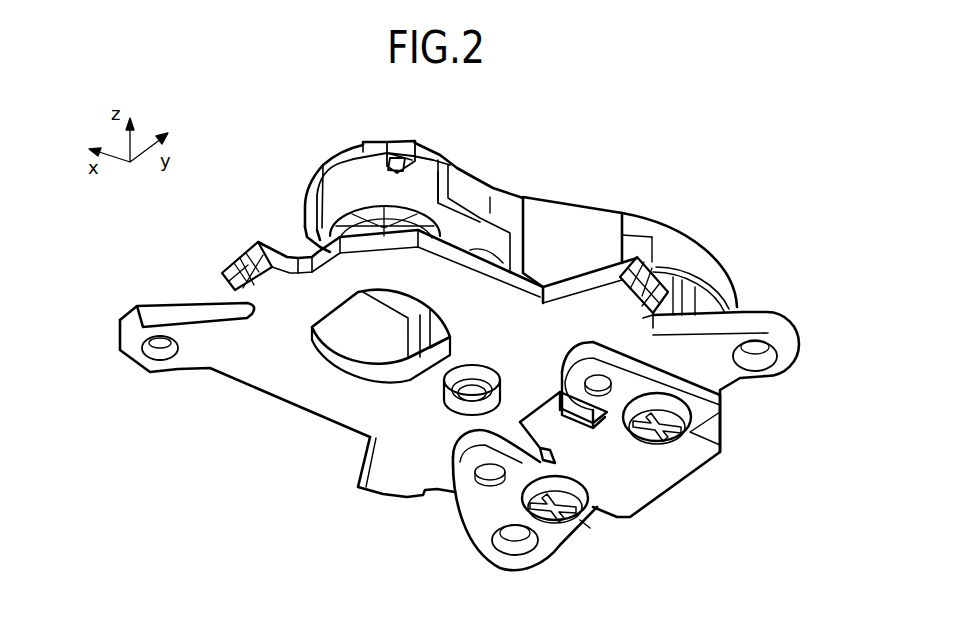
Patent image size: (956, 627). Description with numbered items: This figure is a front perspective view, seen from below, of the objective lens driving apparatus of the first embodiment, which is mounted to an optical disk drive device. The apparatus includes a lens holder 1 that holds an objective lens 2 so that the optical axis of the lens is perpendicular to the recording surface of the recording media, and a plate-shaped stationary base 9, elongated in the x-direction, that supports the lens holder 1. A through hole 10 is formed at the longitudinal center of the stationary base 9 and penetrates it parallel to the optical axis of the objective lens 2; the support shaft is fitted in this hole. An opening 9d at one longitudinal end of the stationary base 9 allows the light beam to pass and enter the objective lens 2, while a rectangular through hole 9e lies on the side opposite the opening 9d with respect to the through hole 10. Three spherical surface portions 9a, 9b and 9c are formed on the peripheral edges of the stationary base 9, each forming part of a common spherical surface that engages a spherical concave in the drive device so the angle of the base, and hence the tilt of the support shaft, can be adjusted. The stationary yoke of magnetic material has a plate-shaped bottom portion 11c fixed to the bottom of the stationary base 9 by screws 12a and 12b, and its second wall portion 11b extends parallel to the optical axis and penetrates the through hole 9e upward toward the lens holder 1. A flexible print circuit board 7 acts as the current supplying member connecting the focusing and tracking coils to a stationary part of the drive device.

The lens holder 1 is at (467, 192).
The objective lens 2 is at (325, 167).
The flexible print circuit board 7 is at (577, 213).
The stationary base 9 is at (263, 370).
The spherical surface portion 9a is at (250, 257).
The spherical surface portion 9b is at (640, 270).
The spherical surface portion 9c is at (395, 497).
The opening 9d is at (343, 370).
The rectangular through hole 9e is at (545, 427).
The through hole 10 is at (447, 410).
The second wall portion 11b is at (548, 423).
The bottom portion 11c is at (670, 467).
The screw 12a is at (560, 530).
The screw 12b is at (692, 430).